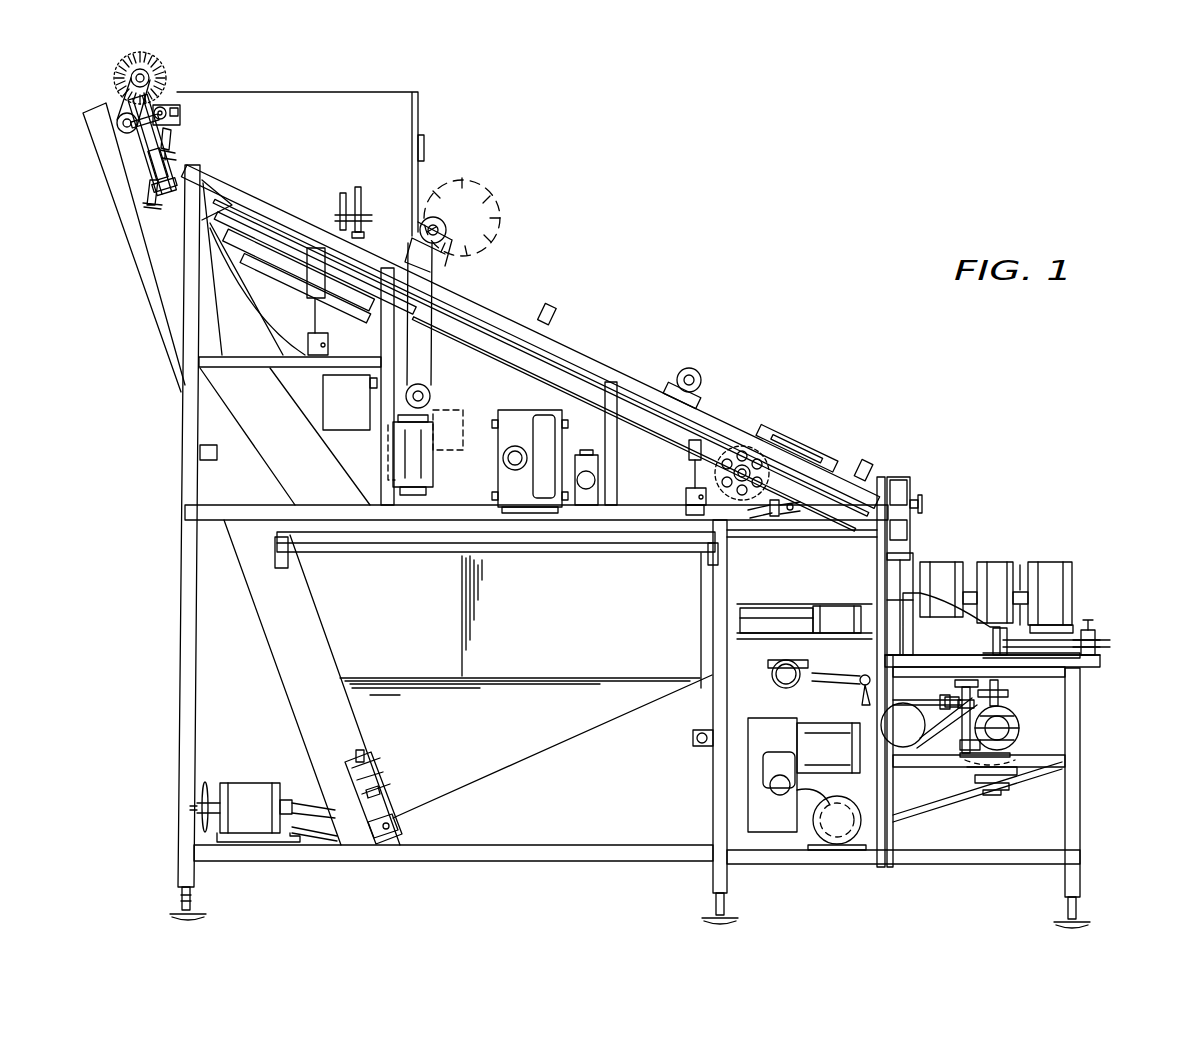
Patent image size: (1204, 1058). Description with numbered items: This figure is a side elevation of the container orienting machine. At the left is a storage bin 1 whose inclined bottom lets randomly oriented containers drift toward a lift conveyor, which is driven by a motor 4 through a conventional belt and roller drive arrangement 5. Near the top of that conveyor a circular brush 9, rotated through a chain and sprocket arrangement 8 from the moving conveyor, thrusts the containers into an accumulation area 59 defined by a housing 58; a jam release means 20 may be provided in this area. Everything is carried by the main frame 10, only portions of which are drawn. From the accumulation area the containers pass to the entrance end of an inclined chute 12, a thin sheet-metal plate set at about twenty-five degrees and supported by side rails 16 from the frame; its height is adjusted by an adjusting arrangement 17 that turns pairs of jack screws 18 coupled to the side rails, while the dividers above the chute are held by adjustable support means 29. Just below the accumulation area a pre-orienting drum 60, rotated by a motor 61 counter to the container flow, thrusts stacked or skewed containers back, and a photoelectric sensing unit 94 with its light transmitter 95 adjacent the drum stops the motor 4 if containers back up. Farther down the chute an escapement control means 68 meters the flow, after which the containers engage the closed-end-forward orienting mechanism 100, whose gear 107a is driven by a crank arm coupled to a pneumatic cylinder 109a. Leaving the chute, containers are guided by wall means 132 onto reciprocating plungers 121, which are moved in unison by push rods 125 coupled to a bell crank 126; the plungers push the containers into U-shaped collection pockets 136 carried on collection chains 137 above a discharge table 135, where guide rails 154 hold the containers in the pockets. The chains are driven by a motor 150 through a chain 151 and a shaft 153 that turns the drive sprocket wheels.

The storage bin 1 is at (523, 758).
The motor 4 is at (243, 786).
The belt and roller drive arrangement 5 is at (300, 796).
The chain and sprocket arrangement 8 is at (180, 92).
The circular brush 9 is at (165, 70).
The main frame 10 is at (186, 392).
The inclined chute 12 is at (283, 228).
The side rails 16 is at (491, 350).
The adjusting arrangement 17 is at (312, 332).
The jack screws 18 is at (334, 357).
The jam release means 20 is at (266, 287).
The adjustable support means 29 is at (560, 305).
The housing 58 is at (352, 92).
The accumulation area 59 is at (282, 145).
The pre-orienting drum 60 is at (472, 200).
The motor 61 is at (430, 450).
The escapement control means 68 is at (702, 375).
The photoelectric sensing unit 94 is at (357, 176).
The light transmitter 95 is at (366, 212).
The closed-end-forward orienting mechanism 100 is at (824, 440).
The gear 107a is at (745, 465).
The pneumatic cylinder 109a is at (766, 520).
The reciprocating plungers 121 is at (858, 578).
The push rods 125 is at (812, 610).
The bell crank 126 is at (770, 622).
The wall means 132 is at (900, 540).
The discharge table 135 is at (1096, 678).
The collection pockets 136 is at (1067, 587).
The collection chains 137 is at (1019, 562).
The motor 150 is at (779, 822).
The chain 151 is at (940, 782).
The shaft 153 is at (1012, 733).
The guide rails 154 is at (1094, 636).